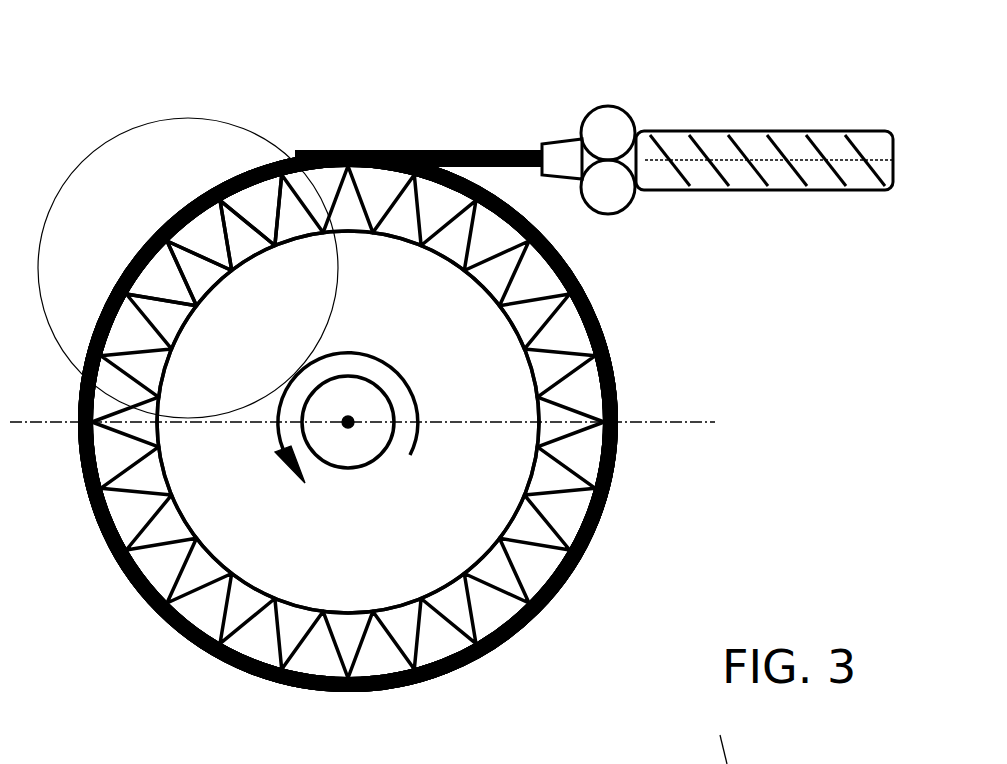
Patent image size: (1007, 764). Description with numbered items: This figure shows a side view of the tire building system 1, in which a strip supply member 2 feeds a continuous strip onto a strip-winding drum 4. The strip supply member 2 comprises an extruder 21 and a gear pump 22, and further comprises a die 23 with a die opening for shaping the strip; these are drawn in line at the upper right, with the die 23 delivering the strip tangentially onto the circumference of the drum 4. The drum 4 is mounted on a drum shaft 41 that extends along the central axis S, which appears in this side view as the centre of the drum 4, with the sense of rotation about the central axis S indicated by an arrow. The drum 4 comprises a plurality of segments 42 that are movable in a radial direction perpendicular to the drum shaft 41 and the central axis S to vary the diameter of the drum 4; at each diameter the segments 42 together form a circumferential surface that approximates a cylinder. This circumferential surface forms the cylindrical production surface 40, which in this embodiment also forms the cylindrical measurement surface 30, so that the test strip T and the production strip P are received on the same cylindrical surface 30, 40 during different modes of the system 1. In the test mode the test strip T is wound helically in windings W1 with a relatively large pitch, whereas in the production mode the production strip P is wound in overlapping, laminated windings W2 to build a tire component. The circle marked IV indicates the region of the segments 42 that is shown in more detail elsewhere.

The tire building system 1 is at (136, 94).
The strip supply member 2 is at (710, 115).
The drum 4 is at (513, 403).
The extruder 21 is at (838, 145).
The gear pump 22 is at (608, 106).
The die 23 is at (563, 146).
The cylindrical measurement surface 30 is at (110, 330).
The cylindrical production surface 40 is at (348, 422).
The drum shaft 41 is at (362, 468).
The segments 42 is at (257, 205).
The central axis S is at (352, 420).
The production strip P is at (142, 602).
The test strip T is at (348, 422).
The windings of the test strip W1 is at (217, 660).
The windings of the production strip W2 is at (348, 422).
The detail view circle IV is at (188, 266).